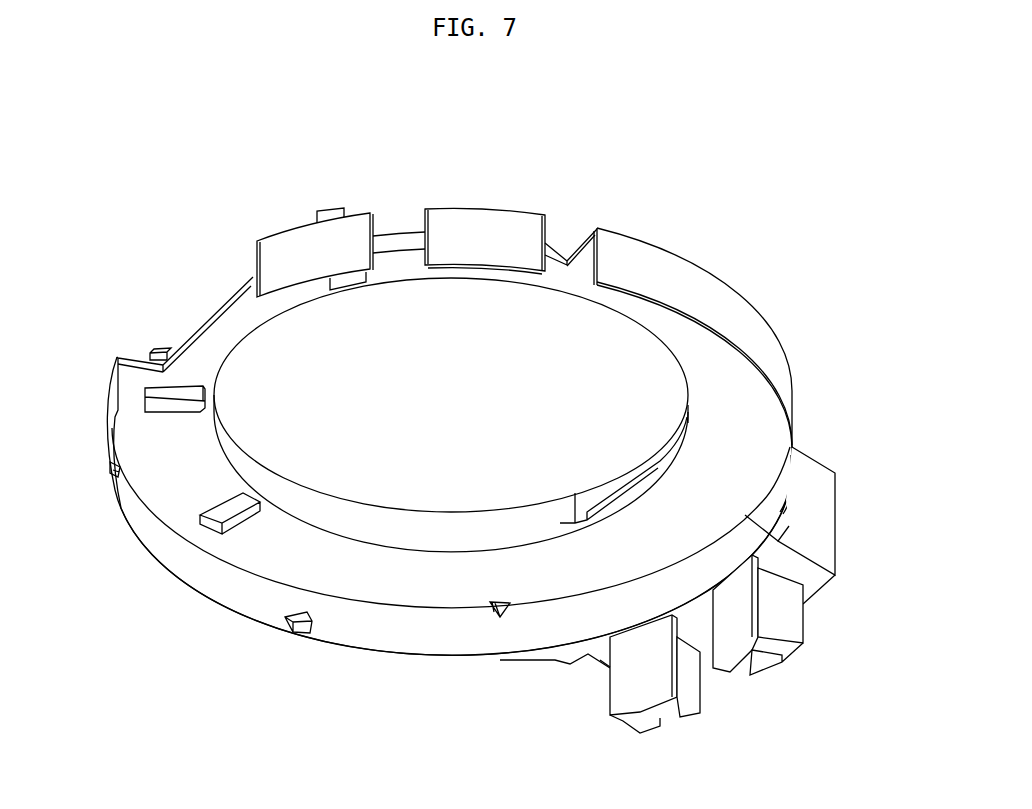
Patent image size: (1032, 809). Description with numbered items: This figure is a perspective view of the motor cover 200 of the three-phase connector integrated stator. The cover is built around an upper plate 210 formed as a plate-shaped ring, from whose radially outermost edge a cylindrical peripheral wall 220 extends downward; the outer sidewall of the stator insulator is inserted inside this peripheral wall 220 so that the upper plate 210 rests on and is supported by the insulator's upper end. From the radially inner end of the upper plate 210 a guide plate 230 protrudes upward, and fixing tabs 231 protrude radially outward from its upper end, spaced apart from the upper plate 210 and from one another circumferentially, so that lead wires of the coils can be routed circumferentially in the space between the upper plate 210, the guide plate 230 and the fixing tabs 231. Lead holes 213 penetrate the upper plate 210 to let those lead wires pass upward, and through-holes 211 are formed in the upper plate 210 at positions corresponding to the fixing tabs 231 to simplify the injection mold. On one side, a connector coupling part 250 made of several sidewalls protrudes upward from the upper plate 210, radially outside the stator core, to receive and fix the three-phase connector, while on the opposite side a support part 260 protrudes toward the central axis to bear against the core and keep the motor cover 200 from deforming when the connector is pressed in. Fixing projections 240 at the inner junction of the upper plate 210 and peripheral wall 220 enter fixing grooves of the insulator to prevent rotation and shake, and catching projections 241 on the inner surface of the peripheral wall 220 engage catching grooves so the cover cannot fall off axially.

The motor cover 200 is at (473, 432).
The upper plate 210 is at (180, 487).
The through-holes 211 is at (233, 530).
The lead holes 213 is at (573, 256).
The peripheral wall 220 is at (130, 493).
The guide plate 230 is at (443, 527).
The fixing tabs 231 is at (155, 350).
The fixing projections 240 is at (498, 617).
The catching projections 241 is at (113, 467).
The connector coupling part 250 is at (818, 507).
The support part 260 is at (792, 622).